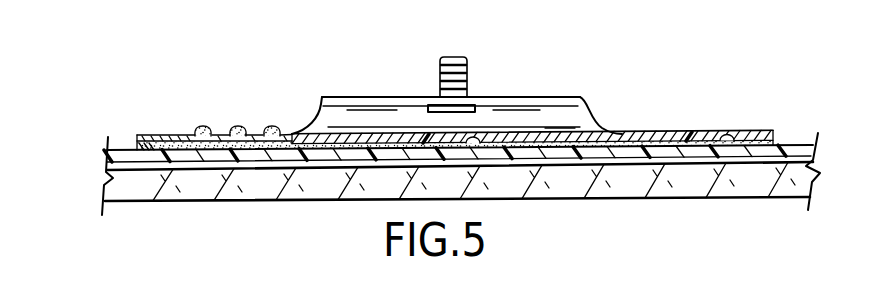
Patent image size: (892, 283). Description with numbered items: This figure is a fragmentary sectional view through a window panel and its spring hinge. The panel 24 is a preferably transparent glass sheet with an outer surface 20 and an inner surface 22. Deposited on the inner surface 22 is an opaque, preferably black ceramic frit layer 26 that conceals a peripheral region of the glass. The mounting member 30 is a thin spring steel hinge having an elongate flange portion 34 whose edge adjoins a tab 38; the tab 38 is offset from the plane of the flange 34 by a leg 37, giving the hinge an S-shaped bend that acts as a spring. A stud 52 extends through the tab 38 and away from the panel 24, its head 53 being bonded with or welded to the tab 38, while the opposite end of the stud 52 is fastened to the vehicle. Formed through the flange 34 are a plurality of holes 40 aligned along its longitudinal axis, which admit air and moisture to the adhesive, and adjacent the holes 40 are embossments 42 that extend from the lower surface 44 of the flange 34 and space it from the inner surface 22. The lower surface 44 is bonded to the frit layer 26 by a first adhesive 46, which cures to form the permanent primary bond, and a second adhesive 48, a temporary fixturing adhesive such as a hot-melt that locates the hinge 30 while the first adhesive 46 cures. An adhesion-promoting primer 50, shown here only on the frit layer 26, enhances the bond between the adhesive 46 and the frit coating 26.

The outer surface 20 is at (143, 203).
The inner surface 22 is at (112, 152).
The panel 24 is at (108, 188).
The frit layer 26 is at (813, 157).
The mounting member 30 is at (603, 88).
The flange portion 34 is at (663, 132).
The leg 37 is at (559, 117).
The tab 38 is at (513, 95).
The holes 40 is at (263, 128).
The embossments 42 is at (703, 138).
The lower surface 44 is at (620, 133).
The first adhesive 46 is at (293, 133).
The second adhesive 48 is at (126, 142).
The primer 50 is at (110, 157).
The stud 52 is at (440, 80).
The head 53 is at (466, 106).